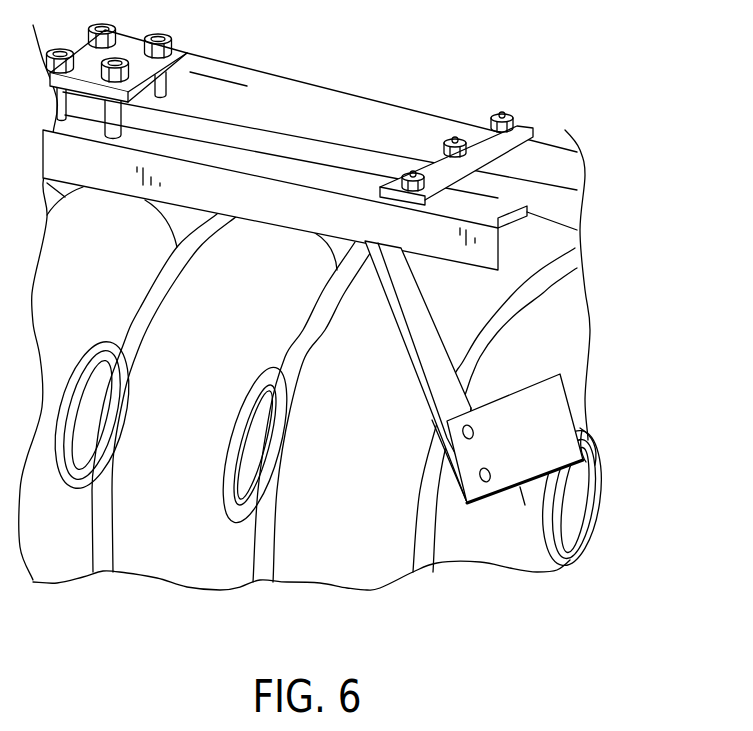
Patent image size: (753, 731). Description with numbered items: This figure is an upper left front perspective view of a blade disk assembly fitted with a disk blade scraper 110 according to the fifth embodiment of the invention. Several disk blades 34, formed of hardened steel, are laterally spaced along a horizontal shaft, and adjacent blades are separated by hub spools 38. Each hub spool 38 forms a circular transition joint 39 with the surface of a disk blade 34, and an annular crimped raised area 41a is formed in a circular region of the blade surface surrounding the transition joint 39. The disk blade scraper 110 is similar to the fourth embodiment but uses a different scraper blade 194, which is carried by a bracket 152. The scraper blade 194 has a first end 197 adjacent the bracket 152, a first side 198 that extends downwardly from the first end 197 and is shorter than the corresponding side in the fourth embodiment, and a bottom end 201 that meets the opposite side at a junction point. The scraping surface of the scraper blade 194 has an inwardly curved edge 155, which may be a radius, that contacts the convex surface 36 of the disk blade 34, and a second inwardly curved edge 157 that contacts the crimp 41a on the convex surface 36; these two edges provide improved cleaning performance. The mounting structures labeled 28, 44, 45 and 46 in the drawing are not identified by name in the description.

The beam 28 is at (333, 115).
The mounting plate 44 is at (268, 213).
The clamp plate 45 is at (480, 133).
The nut 46 is at (513, 115).
The disk blade 34 is at (345, 419).
The convex surface 36 is at (316, 495).
The hub spool 38 is at (252, 462).
The transition joint 39 is at (248, 408).
The annular crimped raised area 41a is at (228, 448).
The disk blade scraper 110 is at (406, 370).
The bracket 152 is at (400, 302).
The inwardly curved edge 155 is at (570, 397).
The second inwardly curved edge 157 is at (590, 442).
The scraper blade 194 is at (540, 337).
The first end 197 is at (505, 397).
The first side 198 is at (463, 467).
The bottom end 201 is at (520, 487).